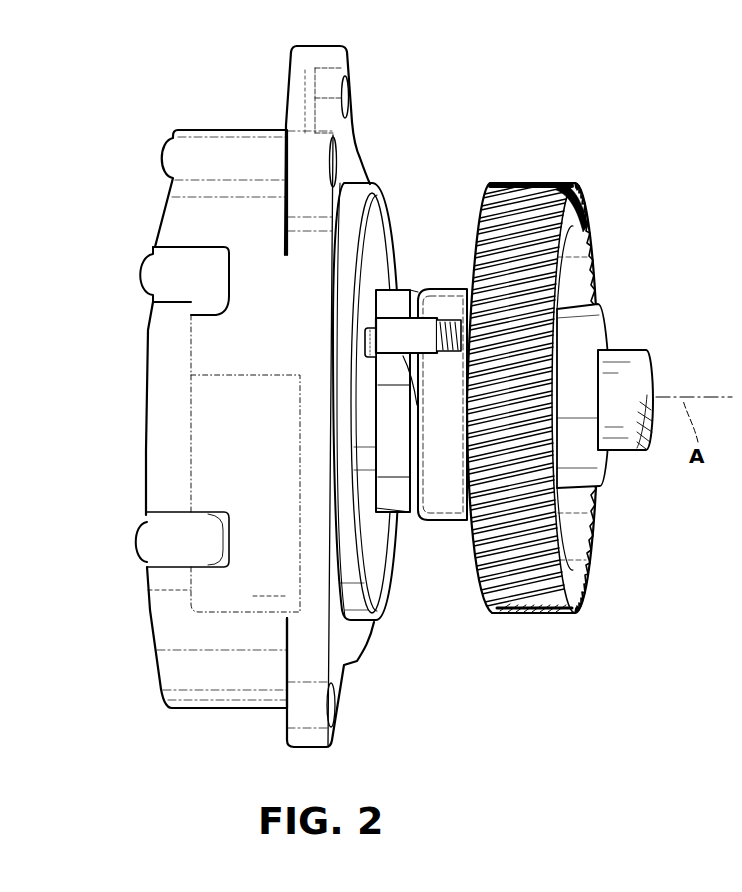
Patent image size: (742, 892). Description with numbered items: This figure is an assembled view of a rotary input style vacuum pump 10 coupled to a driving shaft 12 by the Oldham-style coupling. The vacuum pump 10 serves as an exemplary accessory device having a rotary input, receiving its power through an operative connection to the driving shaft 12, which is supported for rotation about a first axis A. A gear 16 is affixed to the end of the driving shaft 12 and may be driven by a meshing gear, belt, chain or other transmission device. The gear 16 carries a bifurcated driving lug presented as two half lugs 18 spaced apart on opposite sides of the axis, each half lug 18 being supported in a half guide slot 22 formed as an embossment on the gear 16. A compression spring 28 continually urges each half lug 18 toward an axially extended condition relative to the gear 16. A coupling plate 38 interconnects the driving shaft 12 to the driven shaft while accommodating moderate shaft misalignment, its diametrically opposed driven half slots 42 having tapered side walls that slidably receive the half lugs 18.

The vacuum pump 10 is at (178, 130).
The driving shaft 12 is at (627, 360).
The gear 16 is at (554, 183).
The half lug 18 is at (390, 335).
The half guide slot 22 is at (455, 322).
The compression spring 28 is at (457, 357).
The coupling plate 38 is at (412, 516).
The driven half slot 42 is at (366, 338).